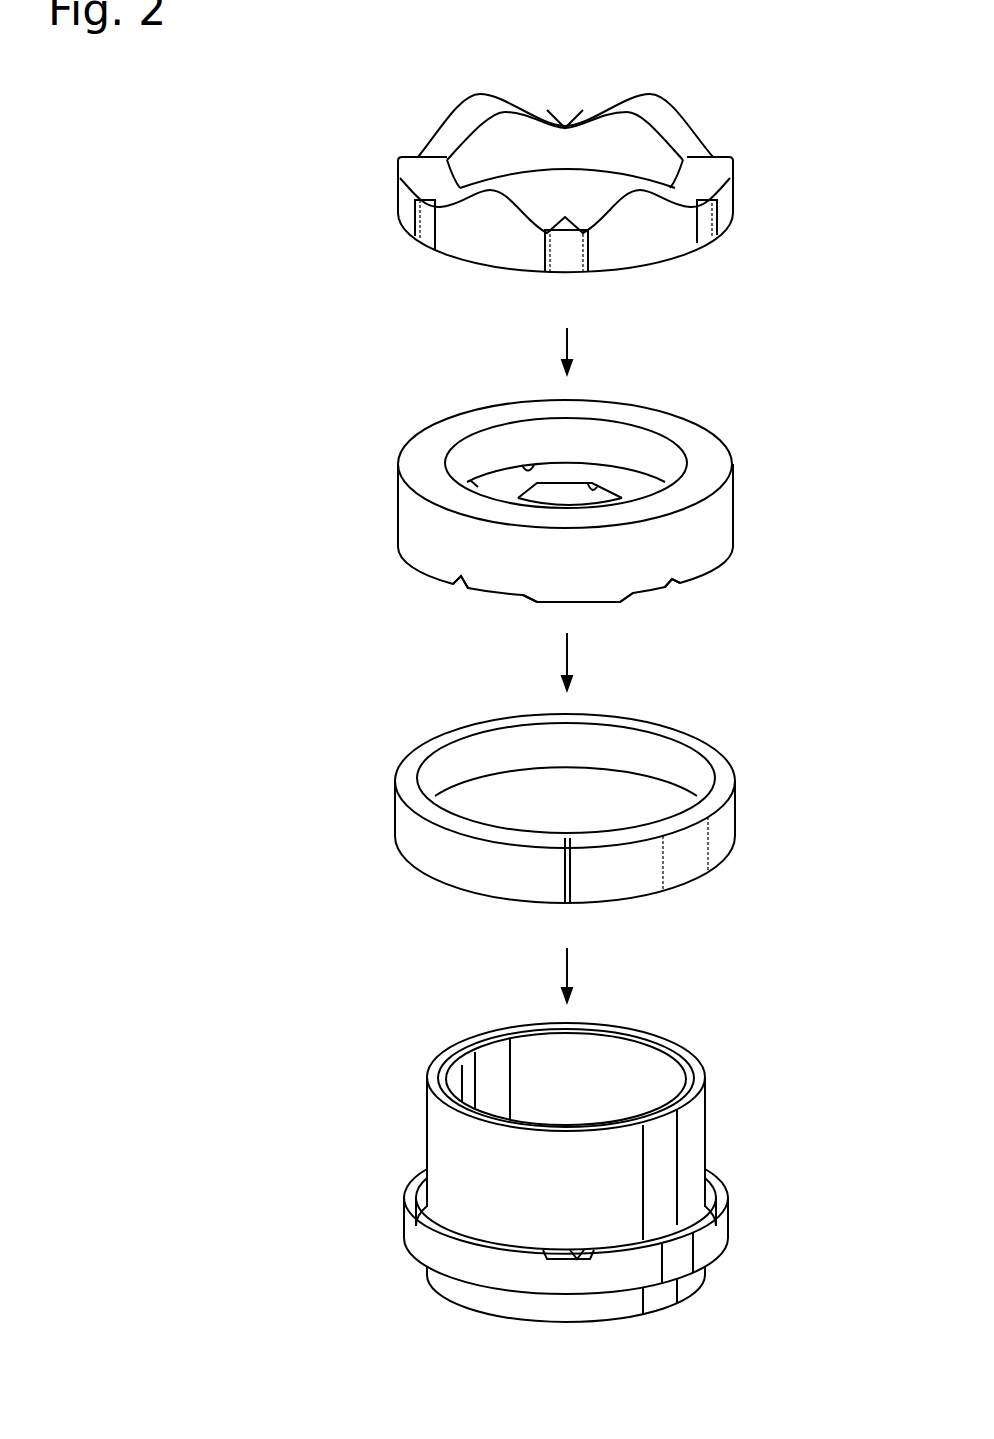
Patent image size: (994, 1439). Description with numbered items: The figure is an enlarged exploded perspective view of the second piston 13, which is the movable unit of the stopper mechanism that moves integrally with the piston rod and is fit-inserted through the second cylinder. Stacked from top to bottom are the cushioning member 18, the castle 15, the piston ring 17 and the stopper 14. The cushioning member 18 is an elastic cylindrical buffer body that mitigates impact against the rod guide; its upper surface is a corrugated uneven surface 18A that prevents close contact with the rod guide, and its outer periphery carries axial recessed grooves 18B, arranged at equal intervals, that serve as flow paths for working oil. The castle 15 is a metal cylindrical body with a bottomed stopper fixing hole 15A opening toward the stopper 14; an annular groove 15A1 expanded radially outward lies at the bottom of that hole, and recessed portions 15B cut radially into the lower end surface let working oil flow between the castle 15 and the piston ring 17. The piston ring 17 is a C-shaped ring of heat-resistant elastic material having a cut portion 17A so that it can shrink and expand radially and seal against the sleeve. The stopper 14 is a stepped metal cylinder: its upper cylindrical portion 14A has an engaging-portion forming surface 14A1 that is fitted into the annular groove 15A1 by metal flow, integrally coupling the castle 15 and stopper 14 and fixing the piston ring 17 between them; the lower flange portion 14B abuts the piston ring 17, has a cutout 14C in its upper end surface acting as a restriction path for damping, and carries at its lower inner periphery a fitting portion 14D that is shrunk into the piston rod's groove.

The second piston 13 is at (255, 158).
The cushioning member 18 is at (437, 188).
The uneven surface 18A is at (705, 178).
The recessed grooves 18B is at (421, 232).
The castle 15 is at (462, 530).
The stopper fixing hole 15A is at (531, 466).
The annular groove 15A1 is at (478, 486).
The recessed portions 15B is at (594, 489).
The piston ring 17 is at (437, 842).
The cut portion 17A is at (566, 838).
The stopper 14 is at (557, 1189).
The cylindrical portion 14A is at (683, 1147).
The engaging-portion forming surface 14A1 is at (667, 1053).
The flange portion 14B is at (703, 1240).
The cutout 14C is at (577, 1252).
The fitting portion 14D is at (492, 1297).